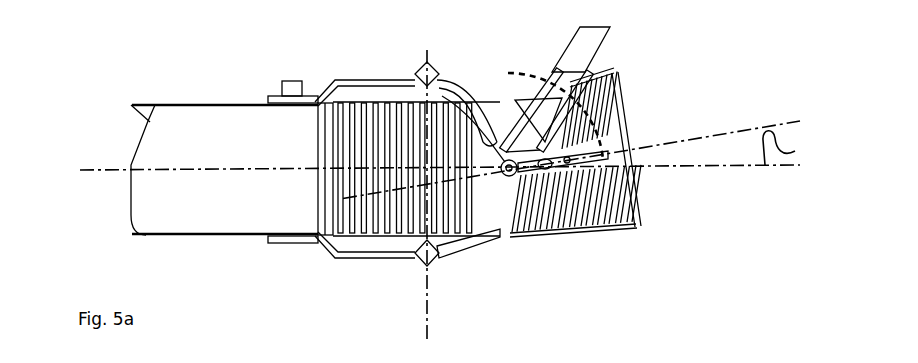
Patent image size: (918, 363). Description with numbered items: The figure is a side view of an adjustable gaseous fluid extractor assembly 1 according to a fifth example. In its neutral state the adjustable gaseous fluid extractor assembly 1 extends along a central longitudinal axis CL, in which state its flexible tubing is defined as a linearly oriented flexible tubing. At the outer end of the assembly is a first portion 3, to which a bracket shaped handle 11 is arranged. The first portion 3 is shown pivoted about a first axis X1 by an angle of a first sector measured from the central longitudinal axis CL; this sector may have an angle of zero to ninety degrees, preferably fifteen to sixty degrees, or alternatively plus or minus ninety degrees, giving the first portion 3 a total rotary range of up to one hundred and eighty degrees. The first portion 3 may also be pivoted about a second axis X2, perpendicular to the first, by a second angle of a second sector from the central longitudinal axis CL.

The adjustable gaseous fluid extractor assembly 1 is at (465, 171).
The first portion 3 is at (557, 197).
The bracket shaped handle 11 is at (572, 42).
The first axis X1 is at (502, 192).
The second axis X2 is at (427, 320).
The central longitudinal axis CL is at (115, 170).